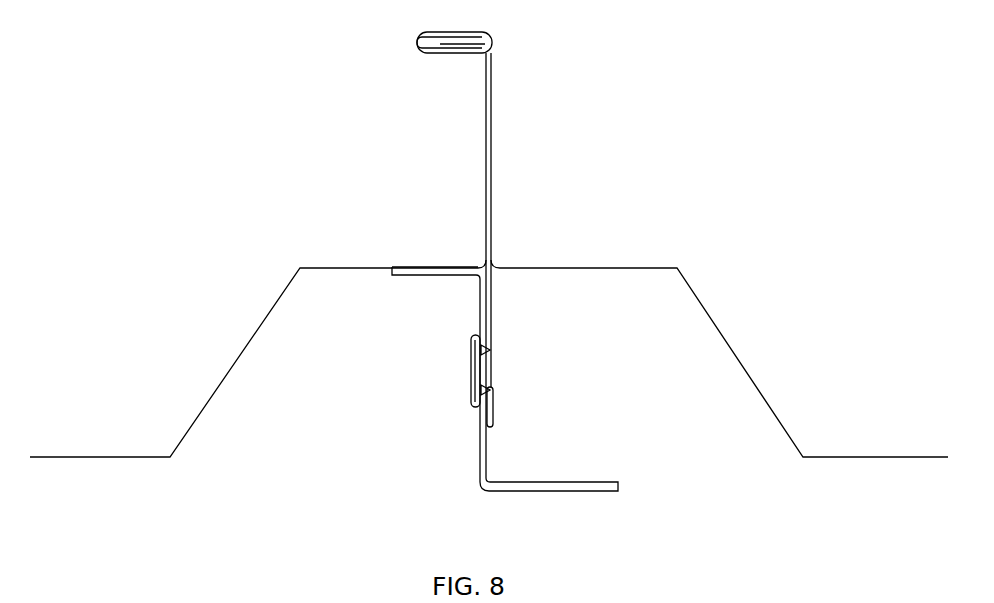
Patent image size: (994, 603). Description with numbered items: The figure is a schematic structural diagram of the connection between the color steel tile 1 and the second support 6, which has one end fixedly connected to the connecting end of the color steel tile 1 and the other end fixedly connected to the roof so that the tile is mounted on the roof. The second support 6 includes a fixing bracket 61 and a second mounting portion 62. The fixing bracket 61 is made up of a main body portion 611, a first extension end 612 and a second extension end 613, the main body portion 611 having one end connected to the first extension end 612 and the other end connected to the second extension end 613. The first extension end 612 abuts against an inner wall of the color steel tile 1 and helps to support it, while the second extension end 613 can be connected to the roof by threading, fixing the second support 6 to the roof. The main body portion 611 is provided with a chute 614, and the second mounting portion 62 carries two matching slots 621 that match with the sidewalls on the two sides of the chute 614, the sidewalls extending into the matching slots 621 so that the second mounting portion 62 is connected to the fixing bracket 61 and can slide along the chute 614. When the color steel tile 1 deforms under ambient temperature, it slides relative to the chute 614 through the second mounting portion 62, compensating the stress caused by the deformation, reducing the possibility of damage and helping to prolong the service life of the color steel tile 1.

The color steel tile 1 is at (302, 266).
The second support 6 is at (593, 288).
The fixing bracket 61 is at (517, 363).
The main body portion 611 is at (482, 318).
The first extension end 612 is at (431, 268).
The second extension end 613 is at (617, 491).
The chute 614 is at (487, 383).
The second mounting portion 62 is at (493, 290).
The matching slot 621 is at (483, 347).